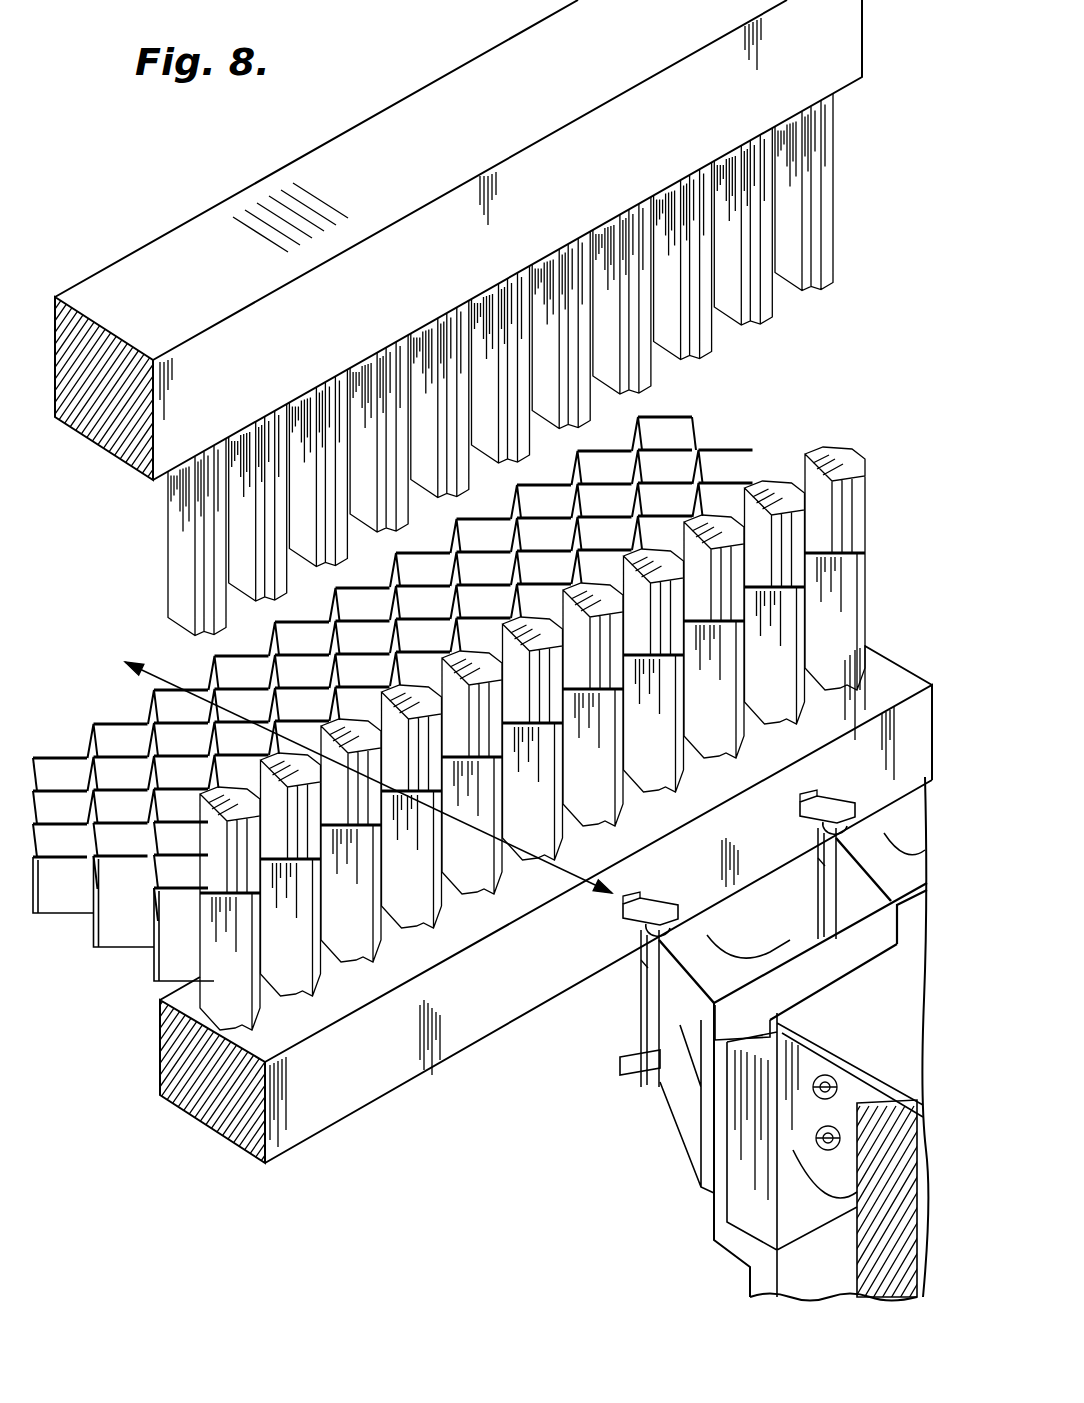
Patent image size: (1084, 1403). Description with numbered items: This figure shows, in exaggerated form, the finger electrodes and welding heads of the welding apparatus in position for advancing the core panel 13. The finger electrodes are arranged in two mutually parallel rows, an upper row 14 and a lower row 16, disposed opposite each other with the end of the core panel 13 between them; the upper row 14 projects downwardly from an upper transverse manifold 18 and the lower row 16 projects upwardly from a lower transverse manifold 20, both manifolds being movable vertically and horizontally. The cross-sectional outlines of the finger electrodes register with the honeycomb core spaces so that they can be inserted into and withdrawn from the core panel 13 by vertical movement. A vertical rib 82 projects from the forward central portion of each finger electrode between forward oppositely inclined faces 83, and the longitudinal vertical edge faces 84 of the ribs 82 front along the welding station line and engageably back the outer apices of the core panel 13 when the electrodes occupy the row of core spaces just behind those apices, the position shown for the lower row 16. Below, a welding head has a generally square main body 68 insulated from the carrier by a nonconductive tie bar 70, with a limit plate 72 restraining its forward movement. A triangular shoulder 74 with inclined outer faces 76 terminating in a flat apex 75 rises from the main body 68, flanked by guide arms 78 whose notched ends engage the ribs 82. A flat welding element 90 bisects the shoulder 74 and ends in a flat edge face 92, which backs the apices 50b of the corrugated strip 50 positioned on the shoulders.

The core panel 13 is at (62, 762).
The upper row of finger electrodes 14 is at (176, 566).
The lower row of finger electrodes 16 is at (212, 864).
The upper transverse manifold 18 is at (372, 304).
The lower transverse manifold 20 is at (362, 1062).
The preformed corrugated strip 50 is at (413, 887).
The strip apex 50b is at (262, 862).
The welding head main body 68 is at (815, 987).
The tie bar 70 is at (805, 1122).
The limit plate 72 is at (862, 1022).
The shoulder 74 is at (893, 840).
The shoulder outer edge or apex 75 is at (803, 818).
The shoulder outer face 76 is at (683, 1100).
The guide arm 78 is at (840, 803).
The vertical rib 82 is at (655, 385).
The forward inclined face 83 is at (800, 290).
The rib edge face 84 is at (838, 262).
The welding element 90 is at (826, 887).
The welding element edge face 92 is at (818, 845).